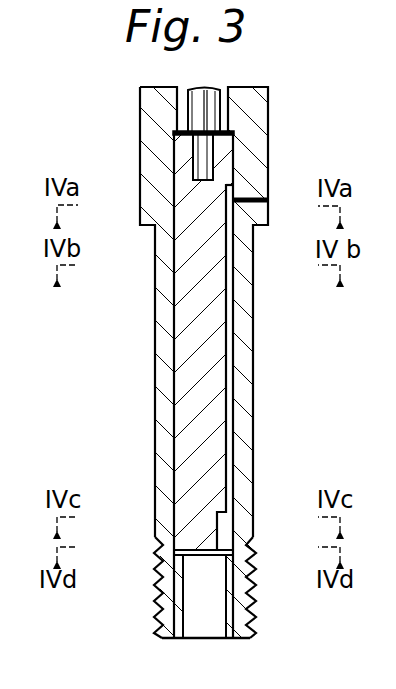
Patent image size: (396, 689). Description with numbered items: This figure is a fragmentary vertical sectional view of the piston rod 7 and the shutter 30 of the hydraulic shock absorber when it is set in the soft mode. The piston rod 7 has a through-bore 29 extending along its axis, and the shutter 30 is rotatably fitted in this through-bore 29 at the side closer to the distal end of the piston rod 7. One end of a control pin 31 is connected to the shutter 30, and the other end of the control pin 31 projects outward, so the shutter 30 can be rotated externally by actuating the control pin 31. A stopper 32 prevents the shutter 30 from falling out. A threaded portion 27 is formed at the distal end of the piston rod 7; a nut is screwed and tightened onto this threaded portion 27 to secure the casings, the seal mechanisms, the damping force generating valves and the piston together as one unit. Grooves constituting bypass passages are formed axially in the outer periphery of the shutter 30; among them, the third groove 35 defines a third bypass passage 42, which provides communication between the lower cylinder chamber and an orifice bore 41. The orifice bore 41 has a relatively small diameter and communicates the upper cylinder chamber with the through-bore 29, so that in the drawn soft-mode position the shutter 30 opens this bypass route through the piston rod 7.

The piston rod 7 is at (257, 112).
The threaded portion 27 is at (258, 617).
The through-bore 29 is at (176, 212).
The shutter 30 is at (214, 292).
The control pin 31 is at (212, 89).
The stopper 32 is at (230, 628).
The third groove 35 is at (228, 347).
The orifice bore 41 is at (264, 203).
The third bypass passage 42 is at (238, 404).